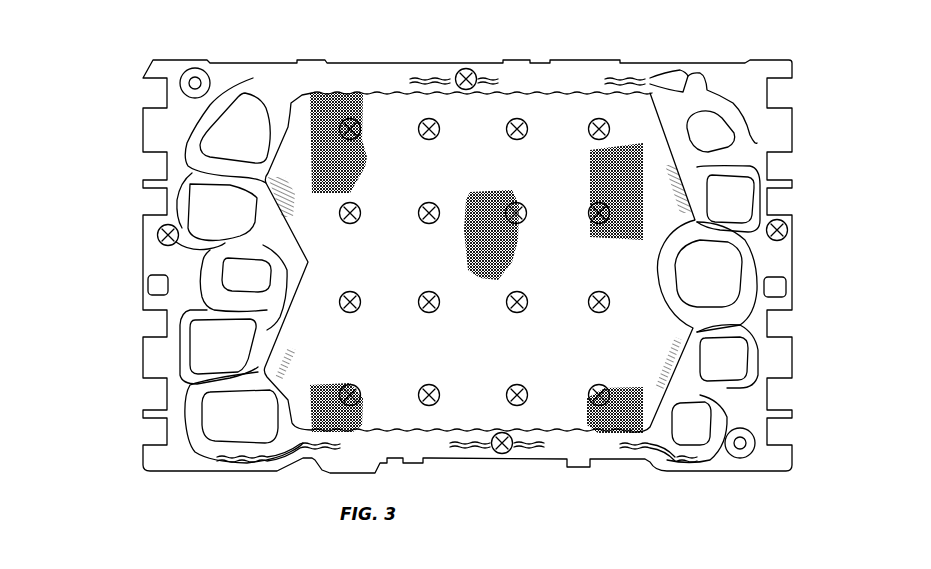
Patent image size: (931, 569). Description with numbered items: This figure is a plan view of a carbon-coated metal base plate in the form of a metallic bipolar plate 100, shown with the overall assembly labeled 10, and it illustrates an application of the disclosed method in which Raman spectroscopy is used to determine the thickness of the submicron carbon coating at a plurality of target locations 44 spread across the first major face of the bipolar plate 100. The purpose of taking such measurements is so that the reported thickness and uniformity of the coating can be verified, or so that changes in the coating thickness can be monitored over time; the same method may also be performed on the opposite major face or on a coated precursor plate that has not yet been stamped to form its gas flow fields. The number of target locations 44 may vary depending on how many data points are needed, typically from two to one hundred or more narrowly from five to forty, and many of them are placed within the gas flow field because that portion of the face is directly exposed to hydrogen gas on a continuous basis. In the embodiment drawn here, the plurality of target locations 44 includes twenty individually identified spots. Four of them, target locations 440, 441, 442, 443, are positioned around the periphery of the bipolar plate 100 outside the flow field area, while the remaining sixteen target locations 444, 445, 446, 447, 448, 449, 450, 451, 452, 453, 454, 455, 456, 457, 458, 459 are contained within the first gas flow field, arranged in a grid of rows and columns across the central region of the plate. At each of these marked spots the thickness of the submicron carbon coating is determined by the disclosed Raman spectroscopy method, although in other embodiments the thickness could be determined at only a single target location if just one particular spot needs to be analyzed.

The gasket assembly 10 is at (100, 67).
The bipolar plate 100 is at (138, 112).
The target locations 44 is at (419, 117).
The target location 440 is at (158, 235).
The target location 441 is at (476, 71).
The target location 442 is at (785, 224).
The target location 443 is at (508, 452).
The target location 444 is at (358, 137).
The target location 445 is at (360, 220).
The target location 446 is at (357, 309).
The target location 447 is at (359, 388).
The target location 448 is at (437, 137).
The target location 449 is at (440, 217).
The target location 450 is at (437, 309).
The target location 451 is at (438, 403).
The target location 452 is at (525, 137).
The target location 453 is at (525, 221).
The target location 454 is at (525, 310).
The target location 455 is at (526, 402).
The target location 456 is at (626, 128).
The target location 457 is at (594, 222).
The target location 458 is at (608, 309).
The target location 459 is at (592, 387).